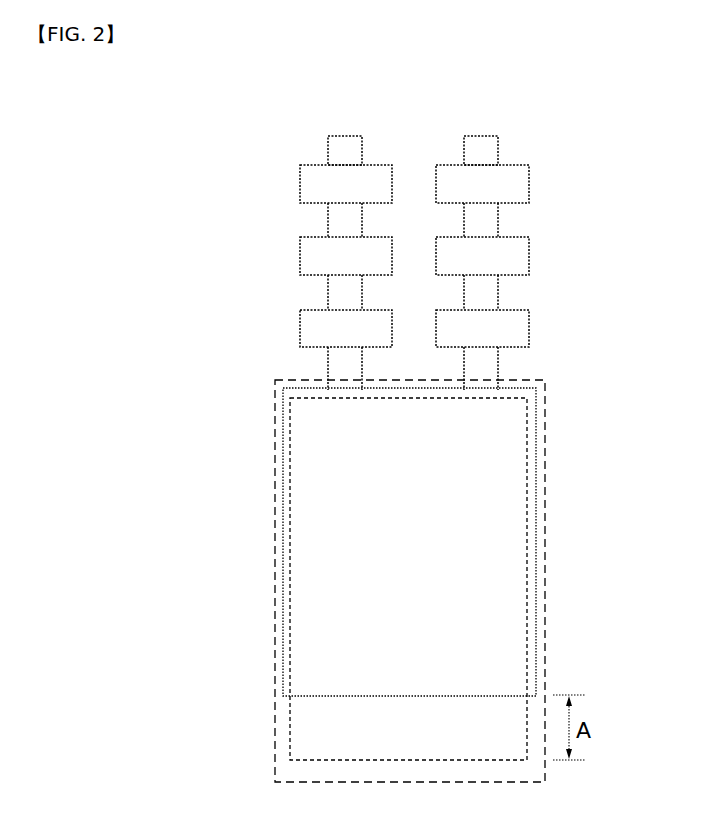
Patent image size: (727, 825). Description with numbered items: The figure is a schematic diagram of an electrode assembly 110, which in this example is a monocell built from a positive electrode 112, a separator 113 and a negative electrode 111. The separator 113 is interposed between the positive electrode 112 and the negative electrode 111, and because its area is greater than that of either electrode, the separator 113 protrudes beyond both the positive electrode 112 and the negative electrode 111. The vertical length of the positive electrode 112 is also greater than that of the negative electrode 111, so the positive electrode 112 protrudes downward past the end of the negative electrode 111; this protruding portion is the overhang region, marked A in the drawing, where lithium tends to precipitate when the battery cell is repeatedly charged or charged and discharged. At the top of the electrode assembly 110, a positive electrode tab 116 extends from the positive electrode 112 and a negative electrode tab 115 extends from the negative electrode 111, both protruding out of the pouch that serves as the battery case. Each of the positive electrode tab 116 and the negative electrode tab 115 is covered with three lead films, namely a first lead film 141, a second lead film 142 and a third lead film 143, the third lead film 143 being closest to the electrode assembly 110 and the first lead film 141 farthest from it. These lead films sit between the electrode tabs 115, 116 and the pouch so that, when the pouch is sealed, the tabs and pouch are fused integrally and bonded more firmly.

The electrode assembly 110 is at (332, 581).
The negative electrode 111 is at (278, 636).
The positive electrode 112 is at (300, 712).
The separator 113 is at (283, 758).
The negative electrode tab 115 is at (498, 362).
The positive electrode tab 116 is at (330, 362).
The first lead film 141 is at (522, 183).
The second lead film 142 is at (300, 259).
The third lead film 143 is at (522, 325).